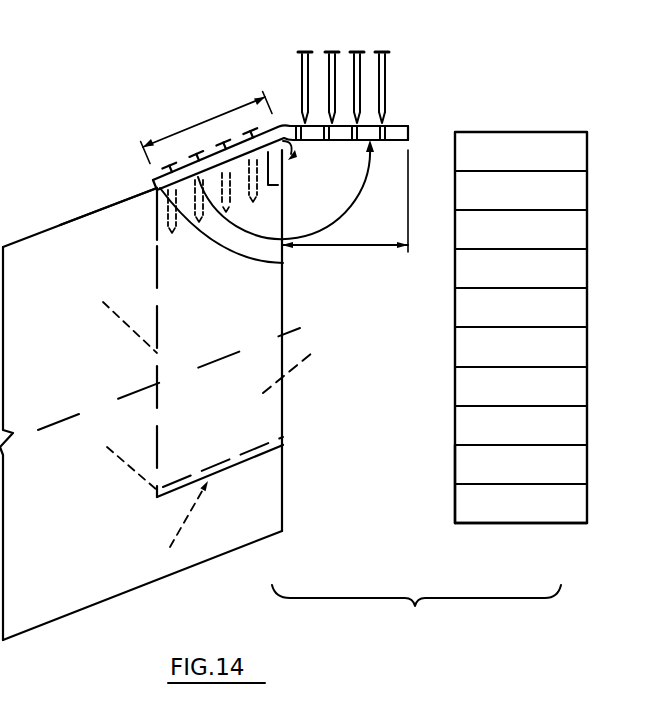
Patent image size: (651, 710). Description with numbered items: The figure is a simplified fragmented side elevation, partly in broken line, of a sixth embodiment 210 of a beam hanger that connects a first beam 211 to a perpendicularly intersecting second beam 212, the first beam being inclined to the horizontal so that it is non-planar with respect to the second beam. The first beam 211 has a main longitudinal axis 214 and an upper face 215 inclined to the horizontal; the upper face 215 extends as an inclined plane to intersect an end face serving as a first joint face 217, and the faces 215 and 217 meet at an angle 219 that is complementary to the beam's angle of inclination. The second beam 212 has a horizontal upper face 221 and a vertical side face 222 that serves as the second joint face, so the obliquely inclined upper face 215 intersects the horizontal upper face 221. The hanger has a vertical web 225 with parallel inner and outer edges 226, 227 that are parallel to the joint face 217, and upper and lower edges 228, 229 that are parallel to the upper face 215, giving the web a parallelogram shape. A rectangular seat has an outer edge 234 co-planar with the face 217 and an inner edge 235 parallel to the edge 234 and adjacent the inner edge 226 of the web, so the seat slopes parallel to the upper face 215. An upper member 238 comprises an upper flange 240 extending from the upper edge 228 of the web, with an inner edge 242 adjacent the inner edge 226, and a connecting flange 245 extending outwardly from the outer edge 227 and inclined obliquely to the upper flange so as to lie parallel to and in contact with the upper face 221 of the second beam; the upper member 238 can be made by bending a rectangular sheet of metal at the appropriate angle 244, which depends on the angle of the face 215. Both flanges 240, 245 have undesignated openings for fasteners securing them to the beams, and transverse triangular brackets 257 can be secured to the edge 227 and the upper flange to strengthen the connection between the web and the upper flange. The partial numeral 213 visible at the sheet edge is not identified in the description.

The sixth embodiment of hanger 210 is at (311, 67).
The upper member 238 is at (283, 78).
The first beam 211 is at (130, 592).
The second beam 212 is at (548, 526).
The panel portion 213 is at (3, 100).
The main longitudinal axis 214 is at (163, 399).
The upper face 215 is at (130, 195).
The first joint face 217 is at (282, 505).
The angle 219 is at (231, 256).
The horizontal upper face 221 is at (488, 130).
The vertical side face 222 is at (455, 510).
The vertical web 225 is at (320, 352).
The inner edge 226 is at (103, 302).
The outer edge 227 is at (282, 310).
The upper edge 228 is at (197, 165).
The lower edge 229 is at (170, 547).
The outer edge 234 is at (282, 445).
The inner edge 235 is at (107, 447).
The upper flange 240 is at (206, 125).
The inner edge 242 is at (157, 190).
The angle 244 is at (360, 190).
The connecting flange 245 is at (377, 240).
The triangular brackets 257 is at (290, 127).